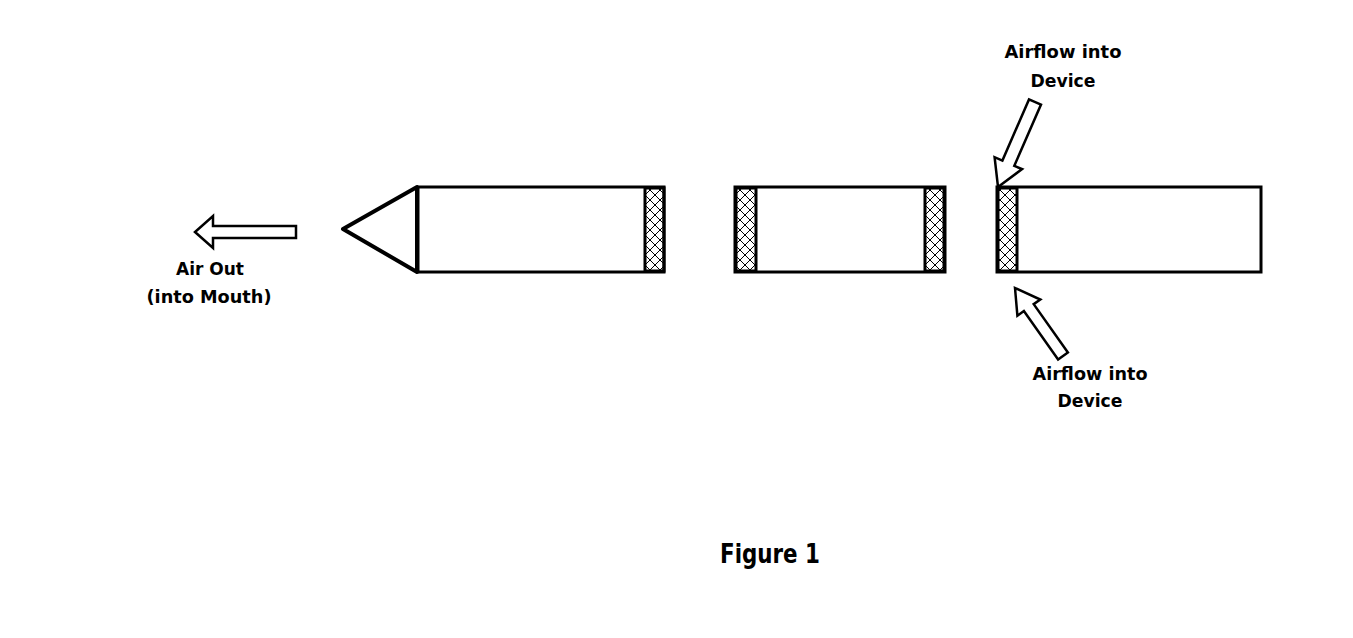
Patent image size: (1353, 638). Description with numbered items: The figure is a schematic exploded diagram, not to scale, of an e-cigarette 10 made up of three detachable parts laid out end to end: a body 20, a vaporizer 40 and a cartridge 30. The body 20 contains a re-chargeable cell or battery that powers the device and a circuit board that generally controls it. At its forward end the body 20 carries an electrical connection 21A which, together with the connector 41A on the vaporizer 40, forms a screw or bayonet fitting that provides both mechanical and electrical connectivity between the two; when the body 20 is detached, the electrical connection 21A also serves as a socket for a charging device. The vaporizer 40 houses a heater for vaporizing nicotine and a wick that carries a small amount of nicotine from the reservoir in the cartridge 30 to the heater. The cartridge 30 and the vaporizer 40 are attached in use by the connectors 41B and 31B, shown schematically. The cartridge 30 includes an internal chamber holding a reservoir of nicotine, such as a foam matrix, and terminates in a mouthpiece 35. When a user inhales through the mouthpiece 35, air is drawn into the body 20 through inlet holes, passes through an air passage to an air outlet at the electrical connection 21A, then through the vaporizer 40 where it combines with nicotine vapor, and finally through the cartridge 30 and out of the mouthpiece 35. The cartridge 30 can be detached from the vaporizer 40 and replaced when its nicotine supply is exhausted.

The e-cigarette 10 is at (341, 417).
The body 20 is at (1155, 263).
The electrical connection 21A is at (1103, 187).
The cartridge 30 is at (541, 201).
The connector 31B is at (605, 257).
The mouthpiece 35 is at (335, 196).
The vaporizer 40 is at (840, 179).
The connector 41A is at (868, 277).
The connector 41B is at (684, 184).